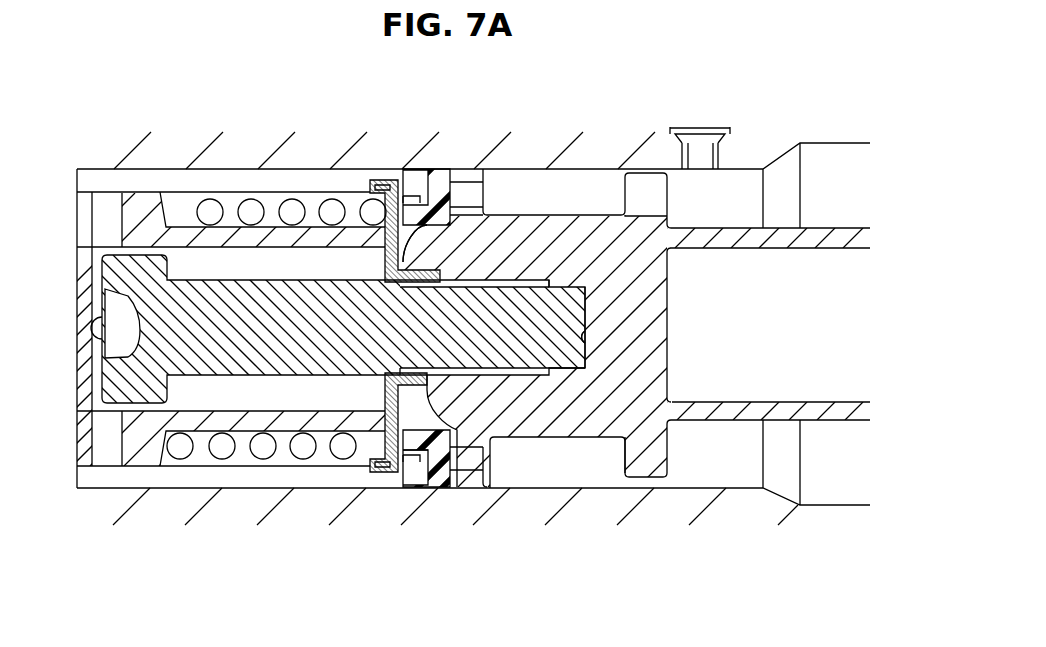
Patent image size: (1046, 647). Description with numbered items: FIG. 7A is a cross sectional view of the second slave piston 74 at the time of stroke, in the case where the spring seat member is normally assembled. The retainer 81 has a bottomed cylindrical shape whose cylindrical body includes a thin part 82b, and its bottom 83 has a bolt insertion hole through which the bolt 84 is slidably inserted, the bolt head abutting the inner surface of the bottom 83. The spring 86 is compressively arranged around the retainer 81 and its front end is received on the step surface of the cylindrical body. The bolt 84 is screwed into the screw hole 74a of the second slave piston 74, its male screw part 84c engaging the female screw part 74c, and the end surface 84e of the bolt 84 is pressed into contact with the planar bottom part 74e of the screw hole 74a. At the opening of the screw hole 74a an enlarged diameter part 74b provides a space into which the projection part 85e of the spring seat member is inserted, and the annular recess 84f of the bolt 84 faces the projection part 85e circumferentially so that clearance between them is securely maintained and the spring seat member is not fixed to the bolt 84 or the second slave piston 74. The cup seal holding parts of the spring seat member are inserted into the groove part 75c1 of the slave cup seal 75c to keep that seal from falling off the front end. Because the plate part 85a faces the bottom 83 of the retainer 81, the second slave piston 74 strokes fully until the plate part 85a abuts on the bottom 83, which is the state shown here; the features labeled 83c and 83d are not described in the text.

The second slave piston 74 is at (548, 425).
The screw hole 74a is at (476, 380).
The enlarged diameter part 74b is at (442, 268).
The female screw part 74c is at (590, 430).
The bottom part 74e is at (593, 348).
The slave cup seal 75c is at (438, 176).
The groove part 75c1 is at (412, 466).
The retainer 81 is at (173, 224).
The thin part 82b is at (205, 425).
The bottom 83 is at (383, 263).
The claw portion of retainer 83c is at (373, 179).
The lip portion of retainer 83d is at (412, 198).
The bolt 84 is at (268, 380).
The male screw part 84c is at (505, 382).
The end surface 84e is at (588, 305).
The recess 84f is at (402, 279).
The plate part 85a is at (383, 391).
The projection part 85e is at (442, 377).
The spring 86 is at (292, 199).